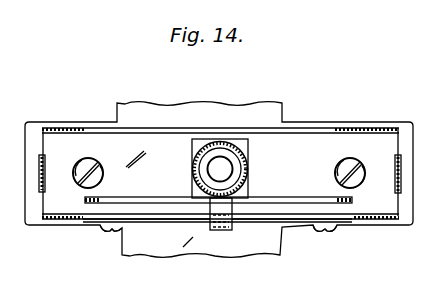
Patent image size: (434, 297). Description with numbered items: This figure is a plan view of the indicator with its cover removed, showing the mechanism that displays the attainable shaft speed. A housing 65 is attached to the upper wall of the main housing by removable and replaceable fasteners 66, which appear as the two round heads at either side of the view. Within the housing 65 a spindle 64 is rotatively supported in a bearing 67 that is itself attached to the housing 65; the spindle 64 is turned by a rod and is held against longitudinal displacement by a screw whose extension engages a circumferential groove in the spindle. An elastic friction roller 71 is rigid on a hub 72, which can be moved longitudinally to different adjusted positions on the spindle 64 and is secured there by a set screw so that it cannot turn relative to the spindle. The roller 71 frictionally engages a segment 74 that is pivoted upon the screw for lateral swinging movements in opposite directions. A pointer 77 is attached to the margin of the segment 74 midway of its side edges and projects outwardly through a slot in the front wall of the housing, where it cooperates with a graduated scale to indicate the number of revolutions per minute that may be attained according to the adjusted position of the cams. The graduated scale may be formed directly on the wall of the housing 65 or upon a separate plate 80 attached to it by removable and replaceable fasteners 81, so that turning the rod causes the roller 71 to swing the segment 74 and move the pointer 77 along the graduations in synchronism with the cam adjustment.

The spindle 64 is at (212, 170).
The housing 65 is at (330, 128).
The fasteners 66 is at (83, 162).
The bearing 67 is at (245, 148).
The elastic friction roller 71 is at (225, 145).
The hub 72 is at (237, 170).
The segment 74 is at (125, 198).
The pointer 77 is at (218, 231).
The plate 80 is at (257, 222).
The fasteners 81 is at (108, 236).